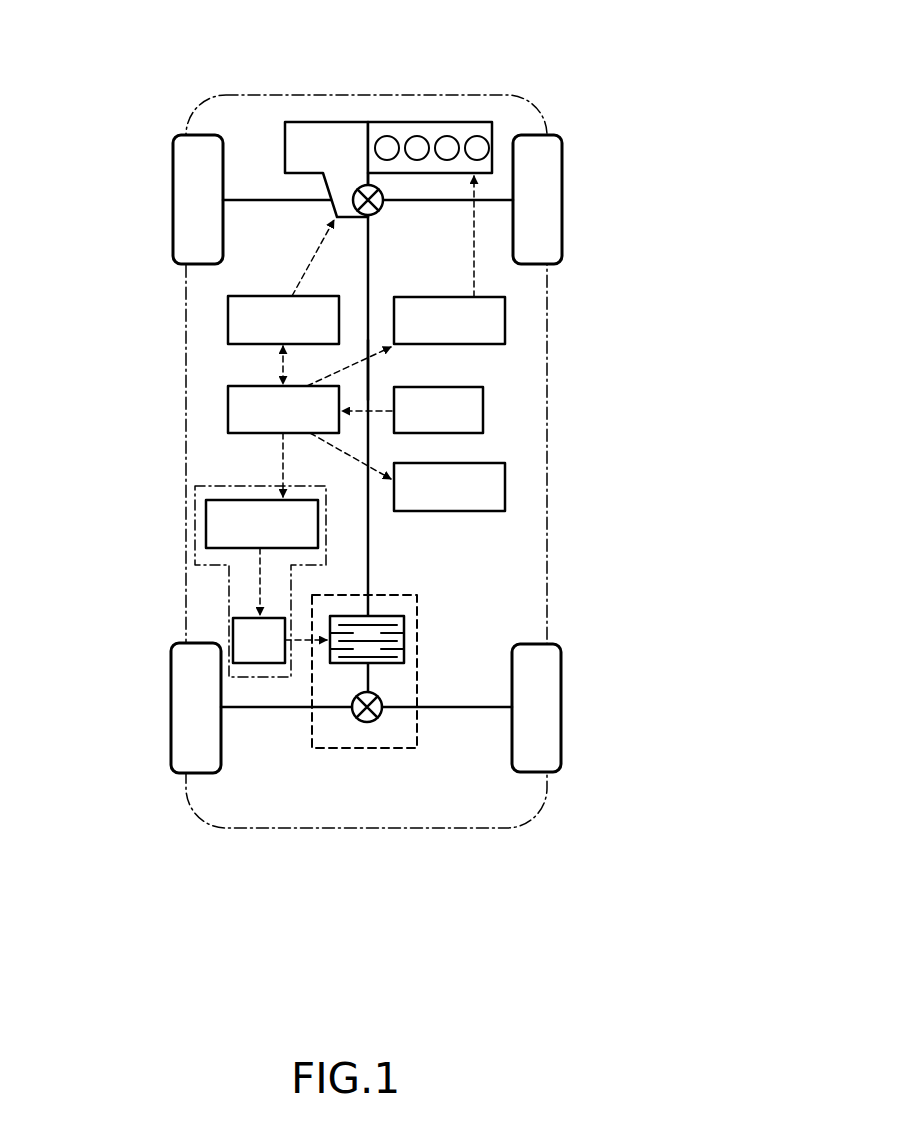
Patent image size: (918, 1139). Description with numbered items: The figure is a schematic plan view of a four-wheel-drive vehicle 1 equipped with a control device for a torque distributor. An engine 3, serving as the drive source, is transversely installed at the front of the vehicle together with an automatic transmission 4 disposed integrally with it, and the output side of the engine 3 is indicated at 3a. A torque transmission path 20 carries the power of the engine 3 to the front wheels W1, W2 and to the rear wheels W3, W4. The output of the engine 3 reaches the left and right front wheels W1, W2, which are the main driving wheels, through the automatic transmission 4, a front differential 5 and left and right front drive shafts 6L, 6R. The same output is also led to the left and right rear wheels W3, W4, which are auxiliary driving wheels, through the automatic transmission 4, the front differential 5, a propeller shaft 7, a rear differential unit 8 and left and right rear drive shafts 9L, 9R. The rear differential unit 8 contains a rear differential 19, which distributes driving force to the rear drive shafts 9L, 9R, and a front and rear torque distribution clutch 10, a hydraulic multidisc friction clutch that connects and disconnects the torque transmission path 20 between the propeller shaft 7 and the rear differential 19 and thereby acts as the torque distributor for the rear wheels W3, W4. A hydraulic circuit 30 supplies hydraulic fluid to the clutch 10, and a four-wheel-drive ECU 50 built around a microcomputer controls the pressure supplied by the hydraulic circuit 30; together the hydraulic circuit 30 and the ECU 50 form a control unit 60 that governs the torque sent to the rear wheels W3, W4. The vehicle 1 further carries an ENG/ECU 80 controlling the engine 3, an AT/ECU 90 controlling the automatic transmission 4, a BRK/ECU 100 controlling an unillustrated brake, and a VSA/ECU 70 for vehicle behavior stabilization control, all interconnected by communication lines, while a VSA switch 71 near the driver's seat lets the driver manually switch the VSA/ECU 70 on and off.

The four-wheel-drive vehicle 1 is at (546, 86).
The engine 3 is at (433, 121).
The engine output shaft 3a is at (371, 176).
The automatic transmission 4 is at (313, 121).
The front differential 5 is at (381, 217).
The left front drive shaft 6L is at (307, 202).
The right front drive shaft 6R is at (457, 203).
The propeller shaft 7 is at (362, 588).
The rear differential unit 8 is at (400, 593).
The left rear drive shaft 9L is at (297, 709).
The right rear drive shaft 9R is at (455, 709).
The front and rear torque distribution clutch 10 is at (408, 638).
The rear differential 19 is at (370, 726).
The torque transmission path 20 is at (378, 375).
The hydraulic circuit 30 is at (233, 630).
The 4WD/ECU 50 is at (206, 525).
The control unit 60 is at (191, 489).
The VSA/ECU 70 is at (228, 411).
The VSA switch 71 is at (483, 413).
The ENG/ECU 80 is at (505, 325).
The AT/ECU 90 is at (228, 323).
The BRK/ECU 100 is at (505, 490).
The left front wheel W1 is at (172, 174).
The right front wheel W2 is at (562, 175).
The left rear wheel W3 is at (171, 697).
The right rear wheel W4 is at (561, 703).